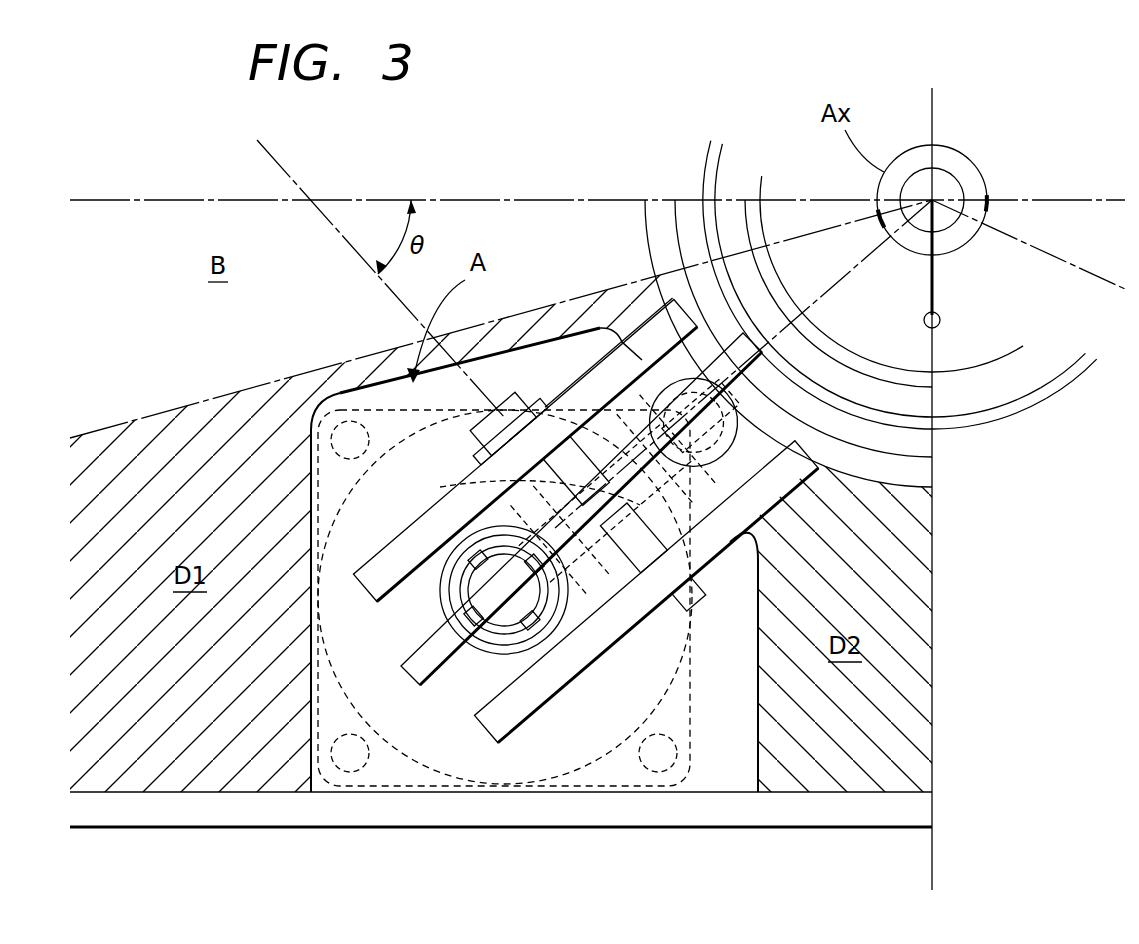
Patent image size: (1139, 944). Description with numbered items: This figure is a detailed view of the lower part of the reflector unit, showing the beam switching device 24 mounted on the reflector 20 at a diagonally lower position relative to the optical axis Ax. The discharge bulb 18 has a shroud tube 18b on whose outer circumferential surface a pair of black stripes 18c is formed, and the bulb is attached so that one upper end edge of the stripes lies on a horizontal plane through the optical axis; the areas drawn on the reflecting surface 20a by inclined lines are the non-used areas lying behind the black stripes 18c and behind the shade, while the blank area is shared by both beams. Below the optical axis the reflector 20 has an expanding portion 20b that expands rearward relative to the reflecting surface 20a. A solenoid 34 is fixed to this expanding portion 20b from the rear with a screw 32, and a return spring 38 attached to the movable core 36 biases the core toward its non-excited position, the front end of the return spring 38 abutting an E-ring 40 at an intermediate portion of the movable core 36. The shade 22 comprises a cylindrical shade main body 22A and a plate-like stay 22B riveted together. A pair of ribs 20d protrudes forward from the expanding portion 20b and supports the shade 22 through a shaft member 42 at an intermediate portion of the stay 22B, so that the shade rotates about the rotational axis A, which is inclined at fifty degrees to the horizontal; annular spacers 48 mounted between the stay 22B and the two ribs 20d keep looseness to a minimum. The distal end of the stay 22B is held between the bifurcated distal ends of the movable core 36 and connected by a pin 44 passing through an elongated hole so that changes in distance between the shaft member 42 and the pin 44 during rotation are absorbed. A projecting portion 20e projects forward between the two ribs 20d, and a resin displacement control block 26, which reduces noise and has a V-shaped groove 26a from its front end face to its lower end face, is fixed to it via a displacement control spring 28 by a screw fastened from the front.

The discharge bulb 18 is at (946, 214).
The shroud tube 18b is at (958, 182).
The black stripes 18c is at (882, 222).
The reflector 20 is at (501, 563).
The reflecting surface 20a is at (230, 762).
The expanding portion 20b is at (710, 768).
The ribs 20d is at (581, 517).
The projecting portion 20e is at (630, 348).
The shade 22 is at (833, 292).
The shade main body 22A is at (1010, 410).
The stay 22B is at (581, 509).
The beam switching device 24 is at (377, 352).
The displacement control block 26 is at (609, 352).
The V-shaped groove 26a is at (445, 488).
The displacement control spring 28 is at (694, 421).
The screw 32 is at (385, 790).
The solenoid 34 is at (600, 790).
The movable core 36 is at (504, 590).
The return spring 38 is at (504, 590).
The E-ring 40 is at (503, 589).
The shaft member 42 is at (504, 424).
The pin 44 is at (646, 592).
The annular spacers 48 is at (624, 526).